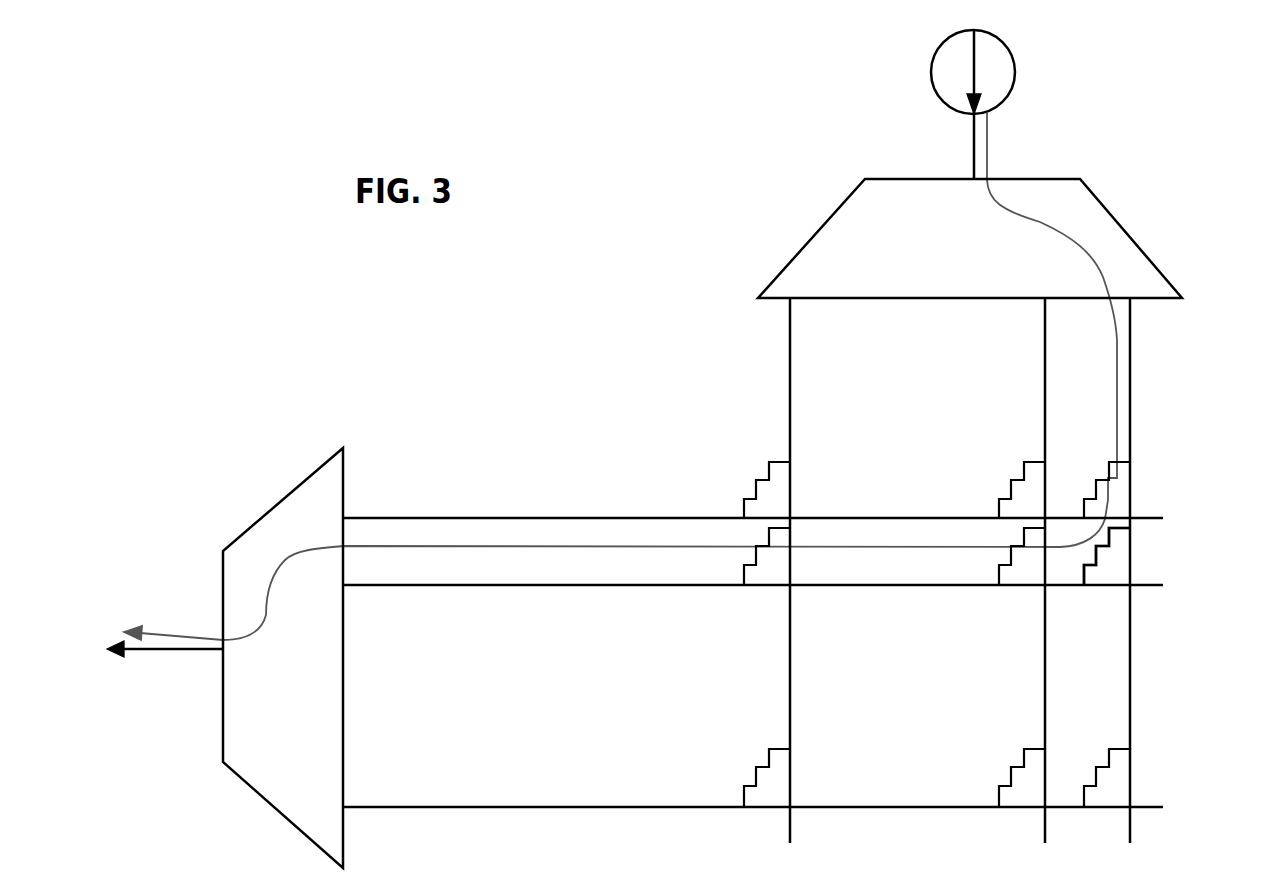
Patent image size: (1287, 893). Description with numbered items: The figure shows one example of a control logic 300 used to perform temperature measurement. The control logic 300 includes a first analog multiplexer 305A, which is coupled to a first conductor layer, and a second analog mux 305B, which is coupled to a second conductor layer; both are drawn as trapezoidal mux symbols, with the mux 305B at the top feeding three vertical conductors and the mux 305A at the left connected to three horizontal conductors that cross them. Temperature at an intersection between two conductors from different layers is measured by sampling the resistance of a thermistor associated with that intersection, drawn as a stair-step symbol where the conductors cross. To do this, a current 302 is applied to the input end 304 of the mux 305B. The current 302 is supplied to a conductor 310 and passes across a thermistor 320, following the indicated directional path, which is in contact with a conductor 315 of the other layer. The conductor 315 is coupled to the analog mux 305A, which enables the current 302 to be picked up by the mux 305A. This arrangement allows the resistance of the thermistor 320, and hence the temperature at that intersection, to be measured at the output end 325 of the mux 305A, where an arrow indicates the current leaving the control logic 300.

The control logic 300 is at (262, 311).
The current 302 is at (1034, 73).
The input end 304 is at (943, 146).
The first multiplexer 305A is at (283, 658).
The second analog mux 305B is at (970, 238).
The conductor 310 is at (1145, 345).
The conductor 315 is at (556, 603).
The thermistor 320 is at (1117, 562).
The output end 325 is at (165, 663).